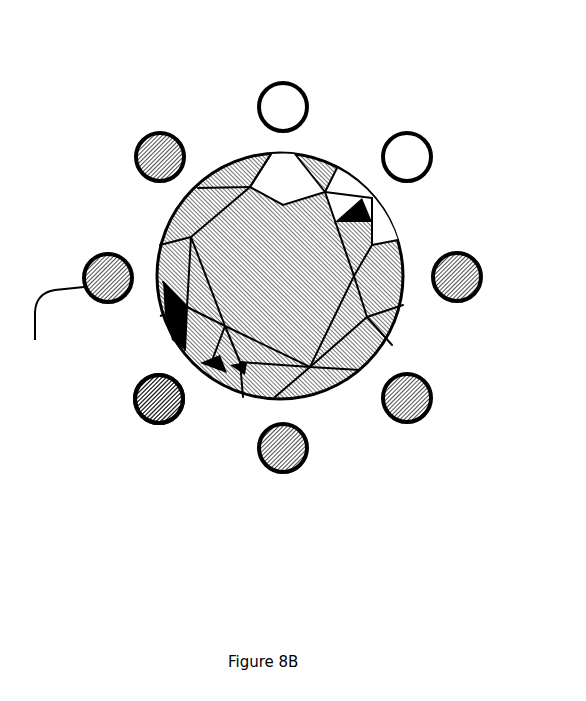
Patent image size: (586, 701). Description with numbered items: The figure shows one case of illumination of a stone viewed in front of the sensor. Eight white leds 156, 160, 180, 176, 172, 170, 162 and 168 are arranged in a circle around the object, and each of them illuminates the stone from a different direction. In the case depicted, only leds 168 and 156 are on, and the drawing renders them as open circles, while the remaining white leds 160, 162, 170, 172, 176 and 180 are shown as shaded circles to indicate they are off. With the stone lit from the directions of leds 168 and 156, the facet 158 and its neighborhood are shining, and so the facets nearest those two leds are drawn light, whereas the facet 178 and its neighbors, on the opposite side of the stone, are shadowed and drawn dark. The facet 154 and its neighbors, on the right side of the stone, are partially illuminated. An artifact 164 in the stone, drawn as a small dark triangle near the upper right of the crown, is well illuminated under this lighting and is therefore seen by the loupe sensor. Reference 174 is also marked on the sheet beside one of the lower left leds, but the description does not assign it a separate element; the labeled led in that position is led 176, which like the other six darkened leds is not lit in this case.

The facet 154 is at (365, 290).
The white led 156 is at (278, 83).
The facet 158 is at (323, 175).
The white led 160 is at (150, 132).
The white led 162 is at (445, 250).
The artifact 164 is at (357, 202).
The white led 168 is at (397, 132).
The white led 170 is at (383, 415).
The white led 172 is at (260, 452).
The light source 174 is at (125, 399).
The white led 176 is at (133, 398).
The facet 178 is at (182, 277).
The white led 180 is at (160, 316).